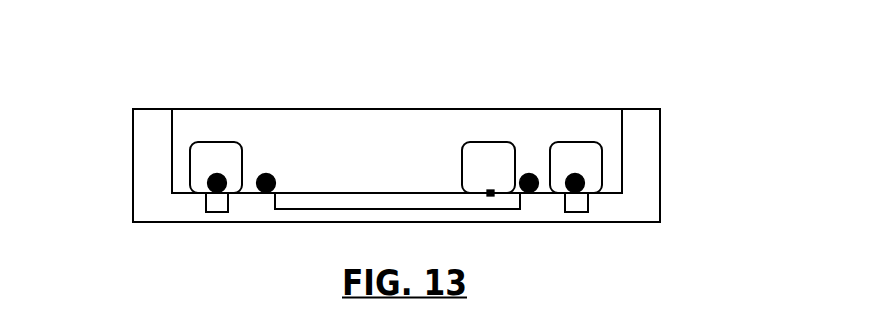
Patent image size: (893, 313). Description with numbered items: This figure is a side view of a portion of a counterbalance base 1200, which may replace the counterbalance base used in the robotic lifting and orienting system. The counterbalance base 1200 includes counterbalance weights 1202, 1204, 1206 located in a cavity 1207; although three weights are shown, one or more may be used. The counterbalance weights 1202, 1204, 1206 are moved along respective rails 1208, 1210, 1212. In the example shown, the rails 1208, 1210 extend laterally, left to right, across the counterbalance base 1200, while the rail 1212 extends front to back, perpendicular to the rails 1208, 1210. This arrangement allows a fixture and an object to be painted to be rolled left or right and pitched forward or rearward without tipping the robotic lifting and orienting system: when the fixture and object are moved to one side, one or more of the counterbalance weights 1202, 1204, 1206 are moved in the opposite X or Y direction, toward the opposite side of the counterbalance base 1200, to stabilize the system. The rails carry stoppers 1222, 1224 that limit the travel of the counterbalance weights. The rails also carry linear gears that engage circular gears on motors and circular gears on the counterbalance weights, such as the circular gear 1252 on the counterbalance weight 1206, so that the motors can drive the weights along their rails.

The counterbalance base 1200 is at (133, 109).
The cavity 1207 is at (172, 130).
The counterbalance weight 1202 is at (213, 142).
The counterbalance weight 1206 is at (487, 142).
The counterbalance weight 1204 is at (578, 142).
The stopper 1222 is at (215, 182).
The stopper 1224 is at (266, 174).
The circular gear 1252 is at (488, 192).
The rail 1208 is at (208, 212).
The rail 1210 is at (588, 209).
The rail 1212 is at (290, 210).